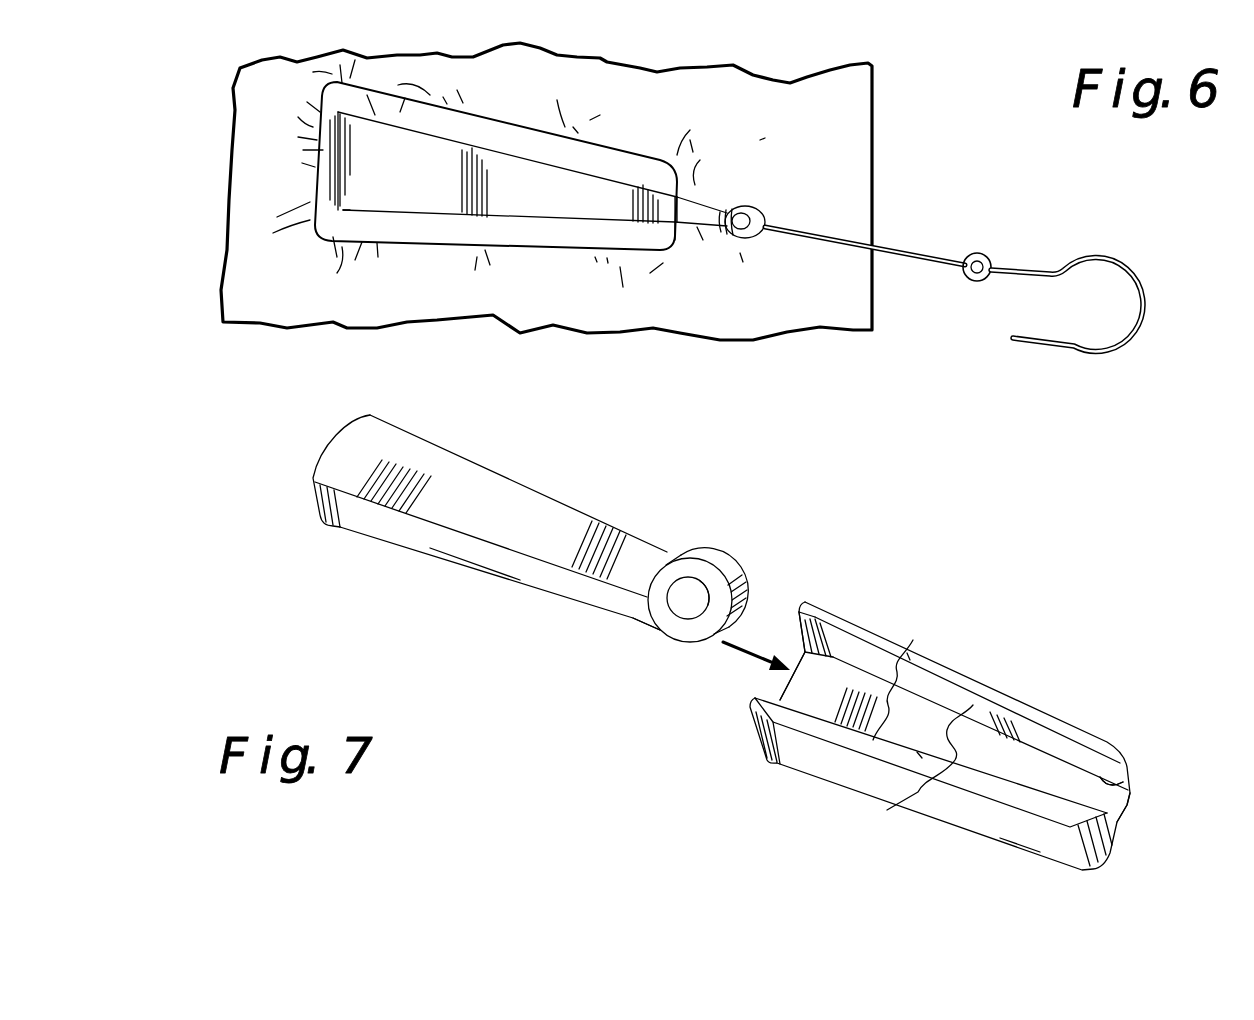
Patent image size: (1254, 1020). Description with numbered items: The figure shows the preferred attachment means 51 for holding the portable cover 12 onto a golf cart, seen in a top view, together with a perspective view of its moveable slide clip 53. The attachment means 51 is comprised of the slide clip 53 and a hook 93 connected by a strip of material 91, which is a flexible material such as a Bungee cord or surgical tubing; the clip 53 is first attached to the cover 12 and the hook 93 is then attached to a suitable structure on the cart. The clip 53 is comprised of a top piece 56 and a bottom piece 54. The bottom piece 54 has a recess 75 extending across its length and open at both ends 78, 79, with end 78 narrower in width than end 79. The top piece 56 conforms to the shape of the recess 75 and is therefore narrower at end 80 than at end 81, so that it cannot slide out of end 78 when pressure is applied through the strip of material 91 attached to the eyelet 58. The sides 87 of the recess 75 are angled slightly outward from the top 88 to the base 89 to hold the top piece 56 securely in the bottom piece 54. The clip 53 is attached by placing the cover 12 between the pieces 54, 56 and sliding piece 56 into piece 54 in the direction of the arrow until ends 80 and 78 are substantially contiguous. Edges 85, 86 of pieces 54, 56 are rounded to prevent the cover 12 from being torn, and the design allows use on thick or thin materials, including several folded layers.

In FIG. 6, the portable cover 12 is at (253, 295).
In FIG. 6, the attachment means 51 is at (768, 128).
In FIG. 6, the slide clip 53 is at (422, 252).
In FIG. 7, the slide clip 53 is at (380, 605).
In FIG. 6, the bottom piece 54 is at (590, 152).
In FIG. 7, the bottom piece 54 is at (1022, 660).
In FIG. 6, the top piece 56 is at (557, 203).
In FIG. 7, the top piece 56 is at (545, 472).
In FIG. 6, the eyelet 58 is at (712, 240).
In FIG. 7, the eyelet 58 is at (712, 545).
In FIG. 7, the recess 75 is at (798, 690).
In FIG. 6, the end 78 is at (683, 247).
In FIG. 7, the end 78 is at (1133, 818).
In FIG. 6, the end 79 is at (311, 227).
In FIG. 7, the end 79 is at (802, 655).
In FIG. 6, the end 80 is at (680, 198).
In FIG. 7, the end 80 is at (640, 621).
In FIG. 6, the end 81 is at (312, 160).
In FIG. 7, the end 81 is at (313, 493).
In FIG. 7, the edge 85 is at (917, 752).
In FIG. 7, the edge 86 is at (468, 566).
In FIG. 7, the sides 87 is at (1073, 807).
In FIG. 7, the top 88 is at (907, 653).
In FIG. 7, the base 89 is at (1040, 857).
In FIG. 6, the strip of material 91 is at (908, 245).
In FIG. 6, the hook 93 is at (1032, 344).